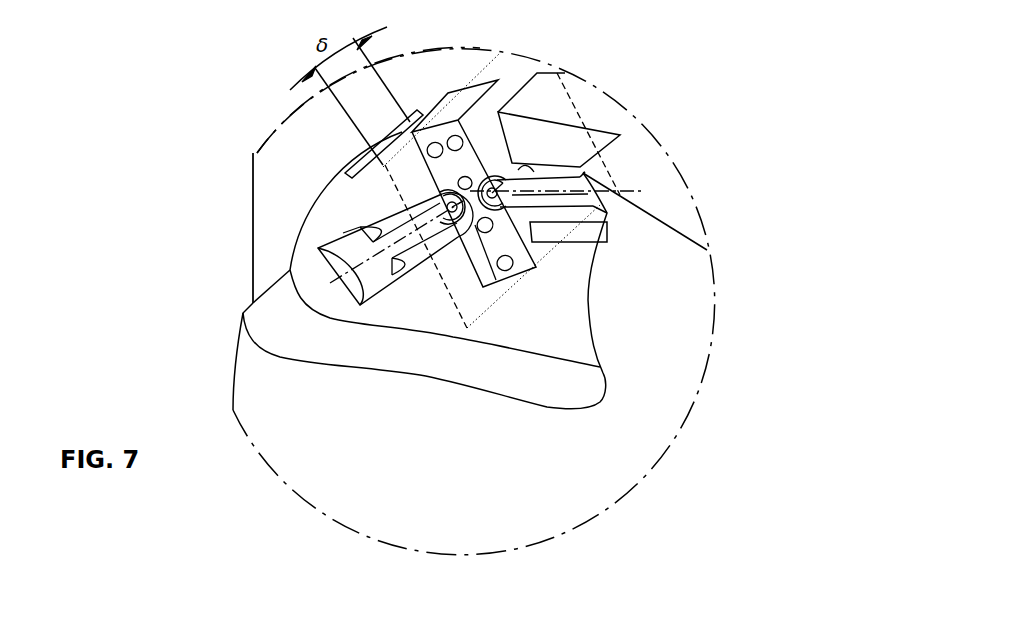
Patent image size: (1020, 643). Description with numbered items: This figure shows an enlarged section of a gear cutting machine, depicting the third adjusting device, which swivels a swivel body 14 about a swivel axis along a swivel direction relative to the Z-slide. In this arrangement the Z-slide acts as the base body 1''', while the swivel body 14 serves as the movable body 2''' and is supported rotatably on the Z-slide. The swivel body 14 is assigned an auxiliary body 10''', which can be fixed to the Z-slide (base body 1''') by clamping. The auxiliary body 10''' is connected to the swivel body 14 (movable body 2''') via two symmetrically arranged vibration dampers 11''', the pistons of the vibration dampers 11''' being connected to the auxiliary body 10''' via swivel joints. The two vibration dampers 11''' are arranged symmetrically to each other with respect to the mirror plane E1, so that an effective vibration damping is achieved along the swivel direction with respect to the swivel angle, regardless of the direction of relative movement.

The base body 1''' is at (295, 100).
The movable body 2''' is at (498, 300).
The swivel body 14 is at (592, 447).
The auxiliary body 10''' is at (482, 153).
The vibration dampers 11''' is at (476, 241).
The mirror plane E1 is at (387, 183).